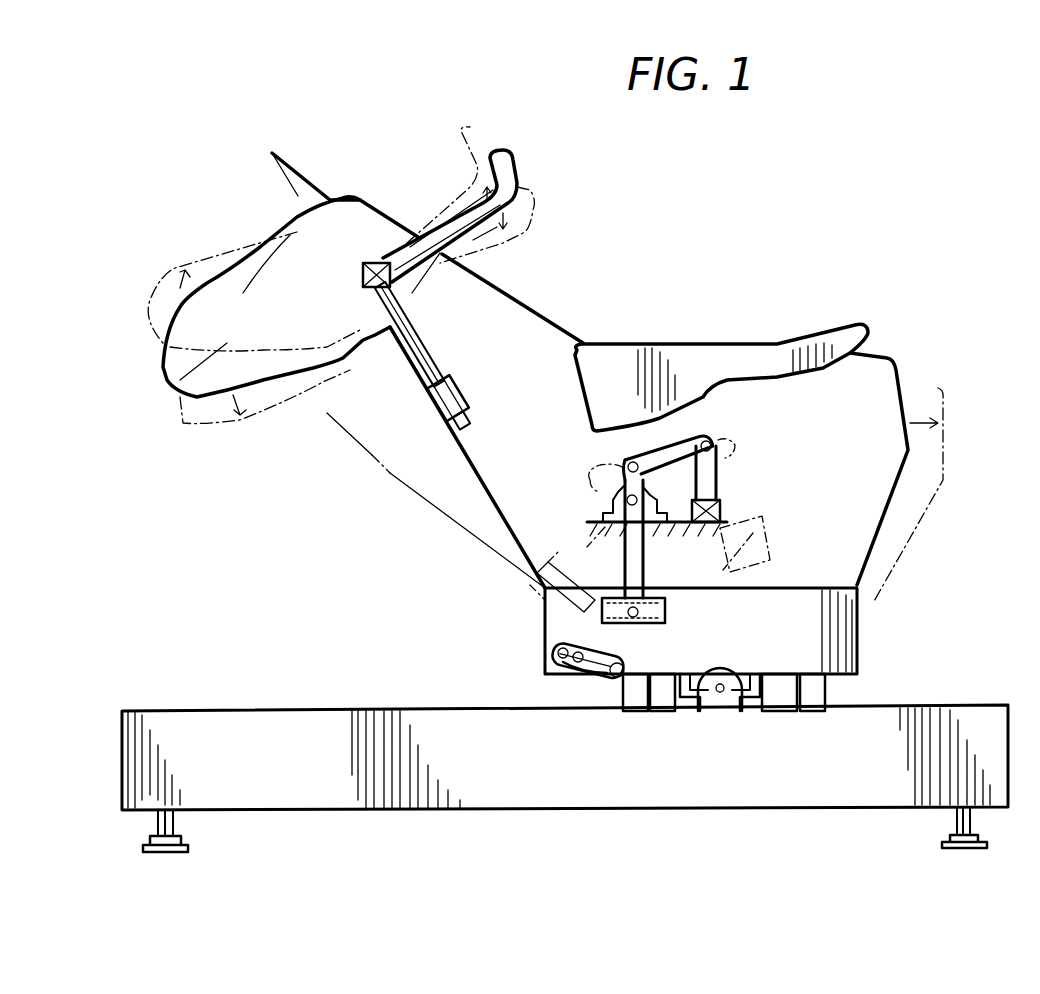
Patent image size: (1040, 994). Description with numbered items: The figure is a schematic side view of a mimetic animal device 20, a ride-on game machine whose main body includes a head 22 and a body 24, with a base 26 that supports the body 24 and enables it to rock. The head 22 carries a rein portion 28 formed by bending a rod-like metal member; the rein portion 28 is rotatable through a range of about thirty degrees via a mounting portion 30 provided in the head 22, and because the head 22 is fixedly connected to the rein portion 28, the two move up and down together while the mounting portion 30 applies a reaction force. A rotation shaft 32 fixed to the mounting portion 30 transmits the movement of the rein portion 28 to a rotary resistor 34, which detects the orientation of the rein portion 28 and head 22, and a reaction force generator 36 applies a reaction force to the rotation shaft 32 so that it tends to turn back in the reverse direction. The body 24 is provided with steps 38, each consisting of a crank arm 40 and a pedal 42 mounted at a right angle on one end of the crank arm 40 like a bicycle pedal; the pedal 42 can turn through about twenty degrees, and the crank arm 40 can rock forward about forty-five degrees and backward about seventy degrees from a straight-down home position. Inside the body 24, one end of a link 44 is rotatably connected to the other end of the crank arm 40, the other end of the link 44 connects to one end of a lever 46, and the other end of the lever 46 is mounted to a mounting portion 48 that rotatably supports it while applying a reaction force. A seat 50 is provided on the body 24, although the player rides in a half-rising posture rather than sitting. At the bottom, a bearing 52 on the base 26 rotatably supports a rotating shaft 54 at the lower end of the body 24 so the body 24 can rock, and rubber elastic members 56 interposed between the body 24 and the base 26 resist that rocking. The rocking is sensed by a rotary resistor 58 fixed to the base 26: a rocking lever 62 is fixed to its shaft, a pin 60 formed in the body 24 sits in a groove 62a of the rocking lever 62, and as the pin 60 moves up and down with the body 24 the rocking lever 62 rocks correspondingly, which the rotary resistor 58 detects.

The mimetic animal device 20 is at (718, 253).
The head 22 is at (352, 210).
The body 24 is at (513, 515).
The base 26 is at (247, 720).
The rein portion 28 is at (510, 153).
The mounting portion 30 is at (363, 278).
The rotation shaft 32 is at (410, 330).
The rotary resistor 34 is at (480, 425).
The reaction force generator 36 is at (468, 392).
The steps 38 is at (750, 598).
The crank arm 40 is at (640, 560).
The pedal 42 is at (665, 618).
The link 44 is at (672, 438).
The lever 46 is at (710, 485).
The mounting portion 48 is at (722, 508).
The seat 50 is at (758, 357).
The bearing 52 is at (713, 702).
The rotating shaft 54 is at (722, 692).
The elastic members 56 is at (650, 693).
The rotary resistor 58 is at (622, 676).
The pin 60 is at (577, 667).
The rocking lever 62 is at (597, 673).
The groove 62a is at (553, 648).